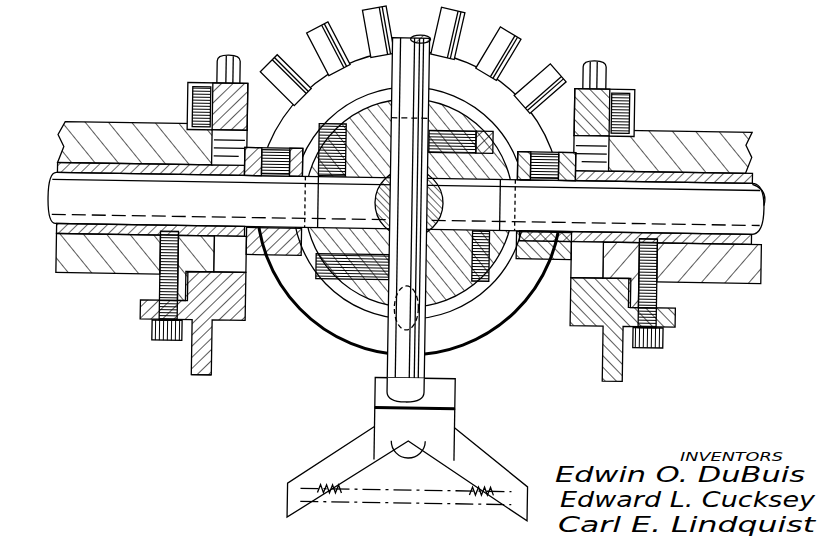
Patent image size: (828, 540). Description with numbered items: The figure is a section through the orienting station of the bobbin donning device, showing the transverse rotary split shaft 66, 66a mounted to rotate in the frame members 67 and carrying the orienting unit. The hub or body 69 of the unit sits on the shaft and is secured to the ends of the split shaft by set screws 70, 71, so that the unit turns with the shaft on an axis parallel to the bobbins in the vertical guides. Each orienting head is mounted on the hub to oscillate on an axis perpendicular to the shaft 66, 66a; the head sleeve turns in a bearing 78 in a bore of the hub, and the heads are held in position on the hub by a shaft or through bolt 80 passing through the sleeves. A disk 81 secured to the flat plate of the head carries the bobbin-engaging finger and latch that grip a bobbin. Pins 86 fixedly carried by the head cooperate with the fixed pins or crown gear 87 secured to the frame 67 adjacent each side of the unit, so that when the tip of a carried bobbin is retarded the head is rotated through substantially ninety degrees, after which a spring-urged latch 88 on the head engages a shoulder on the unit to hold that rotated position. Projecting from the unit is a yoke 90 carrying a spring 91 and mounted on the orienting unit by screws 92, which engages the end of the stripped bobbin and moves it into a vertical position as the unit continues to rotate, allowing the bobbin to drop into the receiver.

The transverse rotary split shaft 66 is at (75, 188).
The transverse rotary split shaft 66a is at (760, 234).
The frame members 67 is at (86, 128).
The hub or body 69 is at (445, 106).
The set screw 70 is at (492, 280).
The set screw 71 is at (326, 134).
The bearing 78 is at (398, 217).
The shaft or through bolt 80 is at (391, 292).
The disk 81 is at (297, 288).
The pins 86 is at (362, 25).
The fixed pins or crown gear 87 is at (216, 67).
The spring-urged latch 88 is at (474, 56).
The yoke 90 is at (336, 450).
The spring 91 is at (340, 500).
The screws 92 is at (447, 118).